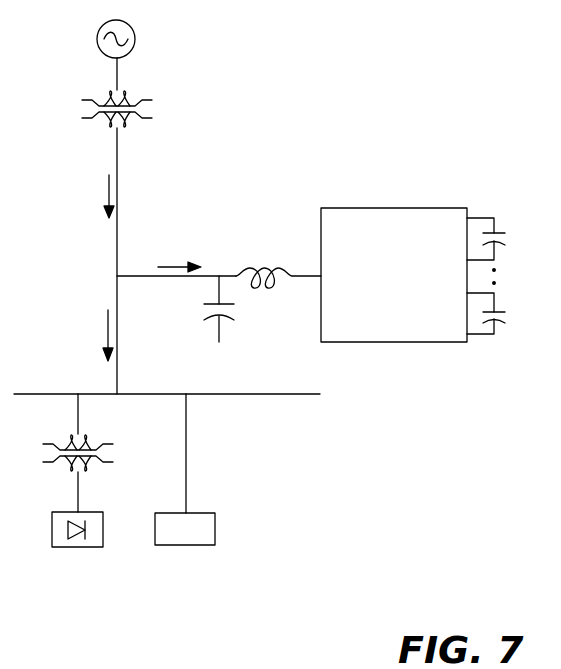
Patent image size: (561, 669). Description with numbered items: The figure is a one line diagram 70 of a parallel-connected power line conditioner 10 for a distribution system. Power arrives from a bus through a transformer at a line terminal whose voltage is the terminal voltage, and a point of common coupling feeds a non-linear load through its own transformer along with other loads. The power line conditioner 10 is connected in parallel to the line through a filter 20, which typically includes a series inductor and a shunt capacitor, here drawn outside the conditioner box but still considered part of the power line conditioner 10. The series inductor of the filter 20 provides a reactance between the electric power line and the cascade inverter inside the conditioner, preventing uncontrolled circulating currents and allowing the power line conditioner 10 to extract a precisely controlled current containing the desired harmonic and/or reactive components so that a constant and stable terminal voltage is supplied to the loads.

The one line diagram 70 is at (344, 102).
The filter 20 is at (251, 246).
The power line conditioner 10 is at (396, 208).